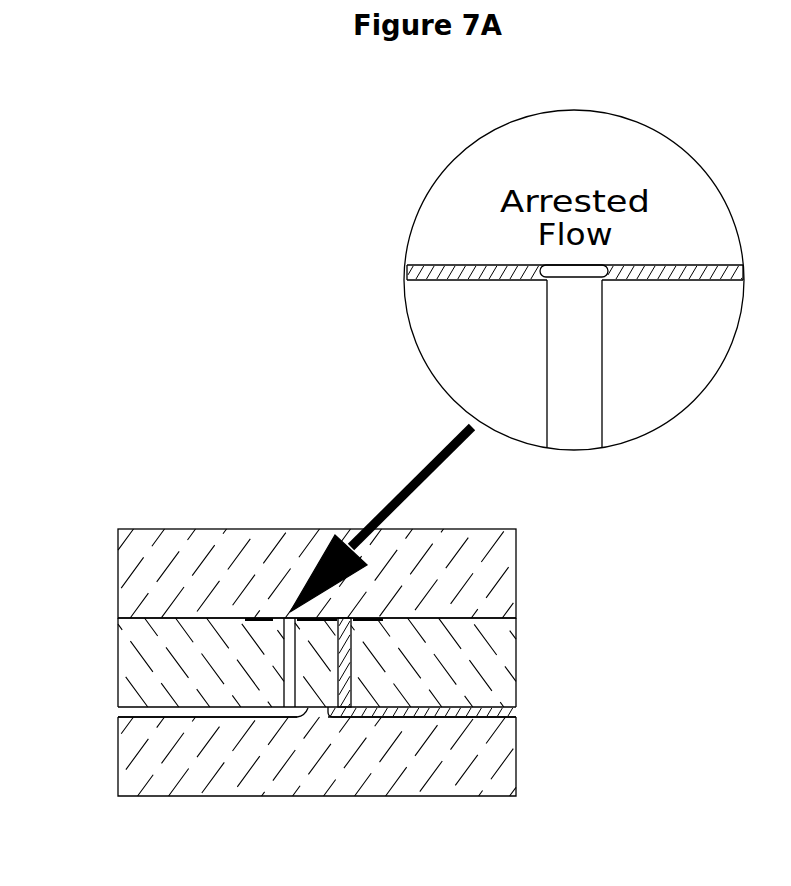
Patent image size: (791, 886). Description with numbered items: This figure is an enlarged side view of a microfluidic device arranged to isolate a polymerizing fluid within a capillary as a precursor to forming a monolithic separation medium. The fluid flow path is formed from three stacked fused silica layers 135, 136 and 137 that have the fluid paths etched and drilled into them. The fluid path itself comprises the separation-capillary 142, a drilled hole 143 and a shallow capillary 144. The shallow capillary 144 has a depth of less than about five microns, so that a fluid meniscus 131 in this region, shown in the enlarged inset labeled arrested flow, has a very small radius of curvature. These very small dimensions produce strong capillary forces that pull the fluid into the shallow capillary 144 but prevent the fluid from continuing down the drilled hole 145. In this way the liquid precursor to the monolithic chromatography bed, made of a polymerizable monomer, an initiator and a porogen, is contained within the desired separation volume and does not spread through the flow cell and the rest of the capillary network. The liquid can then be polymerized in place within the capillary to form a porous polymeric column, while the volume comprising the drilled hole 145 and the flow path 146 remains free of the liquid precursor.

The fluid meniscus 131 is at (533, 265).
The layer 135 is at (505, 555).
The layer 136 is at (505, 660).
The layer 137 is at (510, 760).
The separation-capillary 142 is at (510, 710).
The drilled hole 143 is at (352, 672).
The shallow capillary 144 is at (273, 617).
The drilled hole 145 is at (265, 658).
The flow path 146 is at (118, 663).